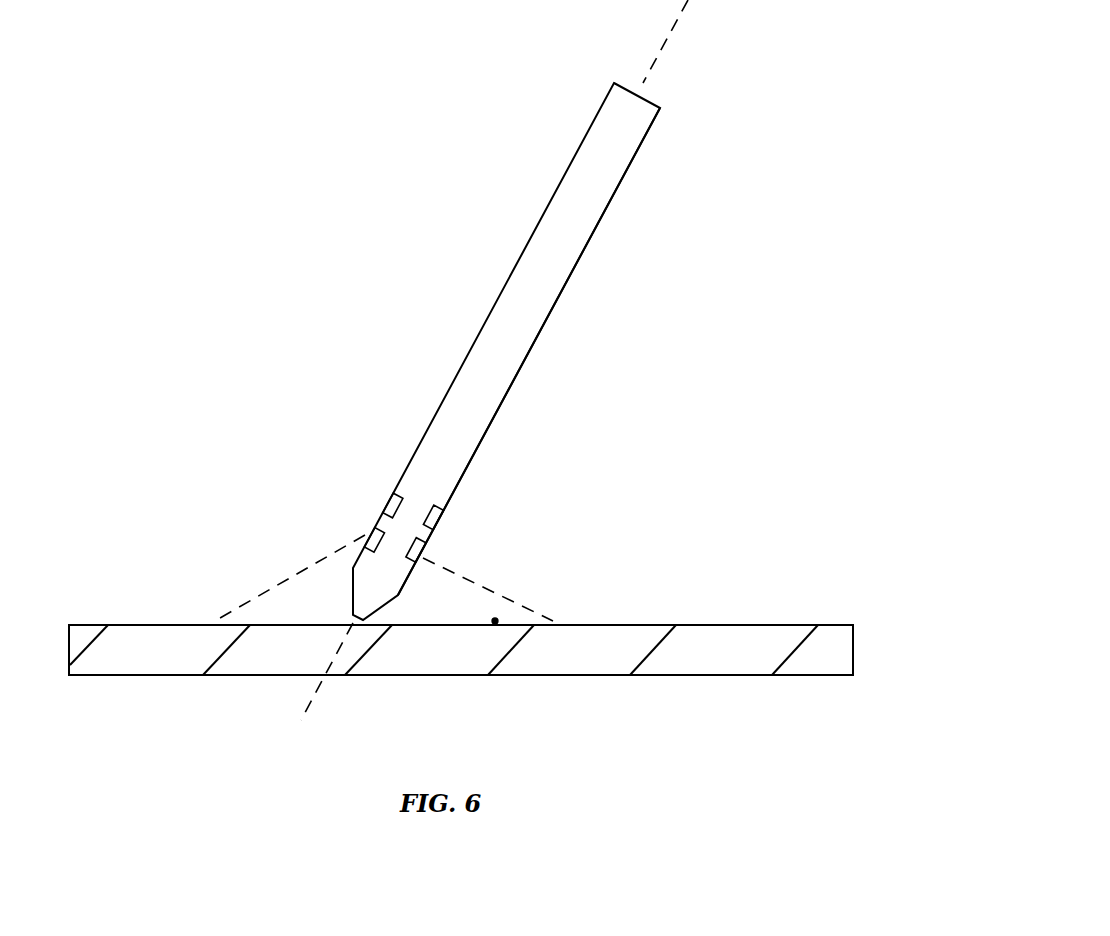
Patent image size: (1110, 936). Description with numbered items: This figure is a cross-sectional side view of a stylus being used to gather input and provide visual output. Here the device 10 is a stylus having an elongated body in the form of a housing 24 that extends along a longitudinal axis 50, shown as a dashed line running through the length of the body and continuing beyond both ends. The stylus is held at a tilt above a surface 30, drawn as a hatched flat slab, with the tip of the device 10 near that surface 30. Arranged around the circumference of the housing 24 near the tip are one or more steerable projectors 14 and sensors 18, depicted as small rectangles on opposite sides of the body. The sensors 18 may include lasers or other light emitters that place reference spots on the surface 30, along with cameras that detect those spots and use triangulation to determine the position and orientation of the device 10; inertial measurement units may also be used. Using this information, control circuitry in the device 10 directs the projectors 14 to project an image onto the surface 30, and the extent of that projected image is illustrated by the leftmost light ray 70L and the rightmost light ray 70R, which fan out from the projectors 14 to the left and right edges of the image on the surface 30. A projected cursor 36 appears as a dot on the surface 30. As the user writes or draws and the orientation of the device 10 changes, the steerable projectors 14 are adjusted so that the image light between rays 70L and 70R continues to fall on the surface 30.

The device 10 is at (522, 291).
The housing 24 is at (525, 365).
The sensors 18 is at (392, 497).
The steerable projectors 14 is at (372, 530).
The leftmost light ray 70L is at (249, 600).
The rightmost light ray 70R is at (463, 572).
The cursor 36 is at (495, 618).
The longitudinal axis 50 is at (670, 36).
The surface 30 is at (690, 660).